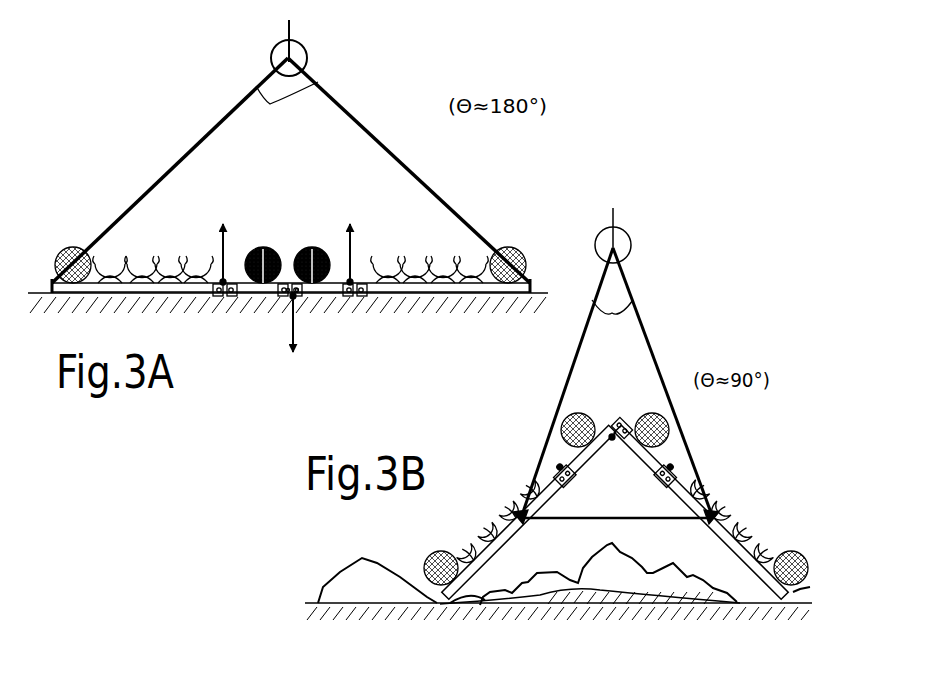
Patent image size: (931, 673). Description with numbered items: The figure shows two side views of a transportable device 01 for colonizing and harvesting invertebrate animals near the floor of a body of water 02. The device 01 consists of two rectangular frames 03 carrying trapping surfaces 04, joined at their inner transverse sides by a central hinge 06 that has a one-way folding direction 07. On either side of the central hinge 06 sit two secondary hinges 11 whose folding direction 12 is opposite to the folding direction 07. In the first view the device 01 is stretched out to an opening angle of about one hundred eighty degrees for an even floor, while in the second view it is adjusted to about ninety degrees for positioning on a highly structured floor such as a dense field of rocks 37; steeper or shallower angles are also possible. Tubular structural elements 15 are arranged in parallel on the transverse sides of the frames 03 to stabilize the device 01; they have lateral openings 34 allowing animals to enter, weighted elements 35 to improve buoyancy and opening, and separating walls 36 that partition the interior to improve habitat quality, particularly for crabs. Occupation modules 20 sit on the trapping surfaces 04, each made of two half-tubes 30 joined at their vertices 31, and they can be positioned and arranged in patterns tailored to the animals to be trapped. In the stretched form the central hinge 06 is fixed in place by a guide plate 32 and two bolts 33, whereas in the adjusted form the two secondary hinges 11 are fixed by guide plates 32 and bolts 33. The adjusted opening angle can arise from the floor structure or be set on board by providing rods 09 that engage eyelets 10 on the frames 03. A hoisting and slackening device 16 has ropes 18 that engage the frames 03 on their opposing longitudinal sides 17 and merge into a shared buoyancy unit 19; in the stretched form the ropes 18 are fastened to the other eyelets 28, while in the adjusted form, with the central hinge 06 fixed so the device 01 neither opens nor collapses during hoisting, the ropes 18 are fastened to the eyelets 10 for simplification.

In FIG. 3A, the transportable device 01 is at (291, 151).
In FIG. 3B, the transportable device 01 is at (608, 363).
In FIG. 3A, the body of water 02 is at (524, 303).
In FIG. 3B, the body of water 02 is at (597, 608).
In FIG. 3A, the frames 03 is at (178, 290).
In FIG. 3B, the frames 03 is at (477, 572).
In FIG. 3A, the trapping surfaces 04 is at (290, 232).
In FIG. 3A, the central hinge 06 is at (275, 315).
In FIG. 3B, the central hinge 06 is at (612, 442).
In FIG. 3A, the folding direction 07 is at (294, 338).
In FIG. 3B, the rods 09 is at (607, 520).
In FIG. 3B, the eyelets 10 is at (523, 520).
In FIG. 3A, the secondary hinges 11 is at (223, 297).
In FIG. 3B, the secondary hinges 11 is at (558, 468).
In FIG. 3A, the folding direction 12 is at (290, 240).
In FIG. 3A, the tubular structural elements 15 is at (68, 248).
In FIG. 3B, the tubular structural elements 15 is at (648, 415).
In FIG. 3A, the hoisting and slackening device 16 is at (135, 152).
In FIG. 3B, the hoisting and slackening device 16 is at (533, 433).
In FIG. 3B, the longitudinal sides 17 is at (760, 577).
In FIG. 3A, the ropes 18 is at (286, 107).
In FIG. 3B, the ropes 18 is at (612, 323).
In FIG. 3A, the buoyancy unit 19 is at (272, 60).
In FIG. 3B, the buoyancy unit 19 is at (632, 249).
In FIG. 3A, the occupation modules 20 is at (160, 268).
In FIG. 3B, the occupation modules 20 is at (490, 548).
In FIG. 3A, the other eyelets 28 is at (50, 282).
In FIG. 3A, the half-tubes 30 is at (195, 268).
In FIG. 3A, the vertices 31 is at (168, 292).
In FIG. 3A, the guide plate 32 is at (288, 283).
In FIG. 3B, the guide plate 32 is at (574, 476).
In FIG. 3A, the bolts 33 is at (297, 297).
In FIG. 3B, the bolts 33 is at (559, 484).
In FIG. 3A, the lateral openings 34 is at (88, 262).
In FIG. 3A, the weighted elements 35 is at (258, 283).
In FIG. 3A, the separating walls 36 is at (316, 248).
In FIG. 3B, the rocks 37 is at (348, 590).